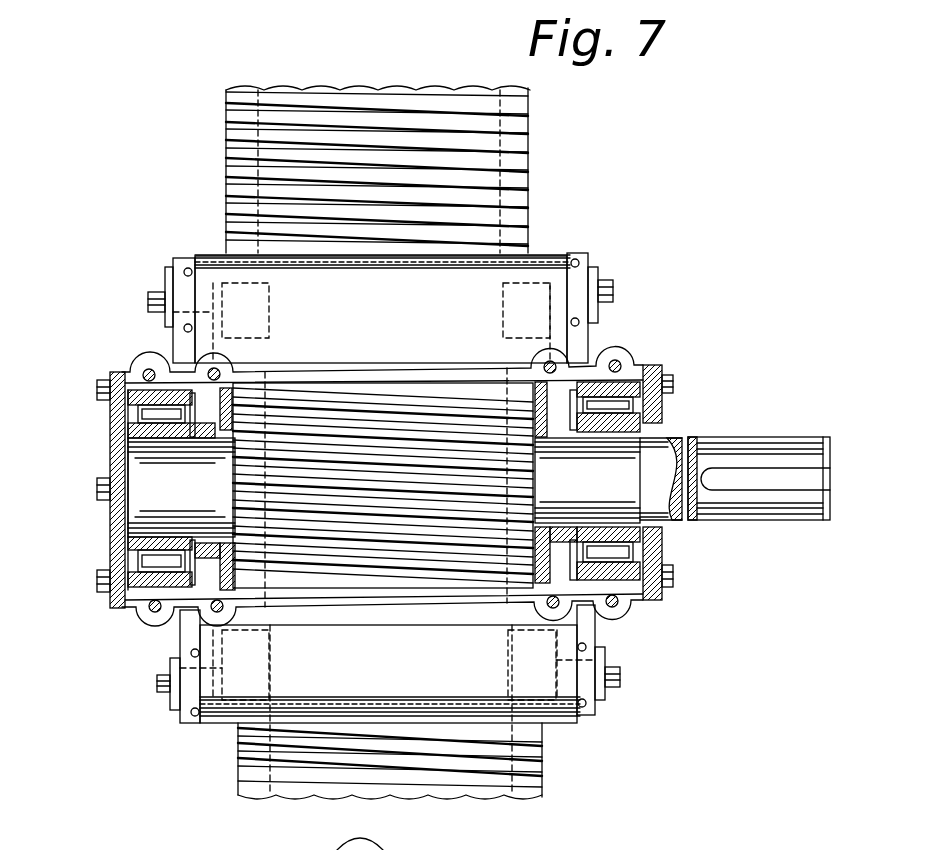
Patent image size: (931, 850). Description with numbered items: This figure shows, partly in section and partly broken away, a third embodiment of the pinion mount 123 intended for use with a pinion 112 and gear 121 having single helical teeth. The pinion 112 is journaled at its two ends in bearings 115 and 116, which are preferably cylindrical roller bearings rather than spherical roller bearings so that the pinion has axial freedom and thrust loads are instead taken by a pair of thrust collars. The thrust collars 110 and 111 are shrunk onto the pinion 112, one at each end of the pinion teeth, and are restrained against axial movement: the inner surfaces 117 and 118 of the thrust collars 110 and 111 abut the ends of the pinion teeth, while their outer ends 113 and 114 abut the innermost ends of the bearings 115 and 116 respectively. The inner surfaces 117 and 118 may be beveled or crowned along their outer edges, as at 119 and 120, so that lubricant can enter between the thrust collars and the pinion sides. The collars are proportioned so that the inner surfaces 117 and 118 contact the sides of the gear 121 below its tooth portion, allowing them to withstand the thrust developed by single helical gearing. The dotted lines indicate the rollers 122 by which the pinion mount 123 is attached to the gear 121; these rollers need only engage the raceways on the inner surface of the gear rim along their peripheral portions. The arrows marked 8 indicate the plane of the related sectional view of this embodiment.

The section line 8 is at (212, 385).
The thrust collar 110 is at (214, 457).
The thrust collar 111 is at (543, 440).
The pinion 112 is at (612, 486).
The outer end of thrust collar 113 is at (178, 537).
The outer end of thrust collar 114 is at (588, 526).
The bearing 115 is at (128, 543).
The bearing 116 is at (640, 572).
The inner surface of thrust collar 117 is at (222, 440).
The inner surface of thrust collar 118 is at (512, 412).
The beveled or crowned edge 119 is at (228, 392).
The beveled or crowned edge 120 is at (530, 368).
The gear 121 is at (520, 164).
The rollers 122 is at (268, 318).
The pinion mount 123 is at (498, 292).